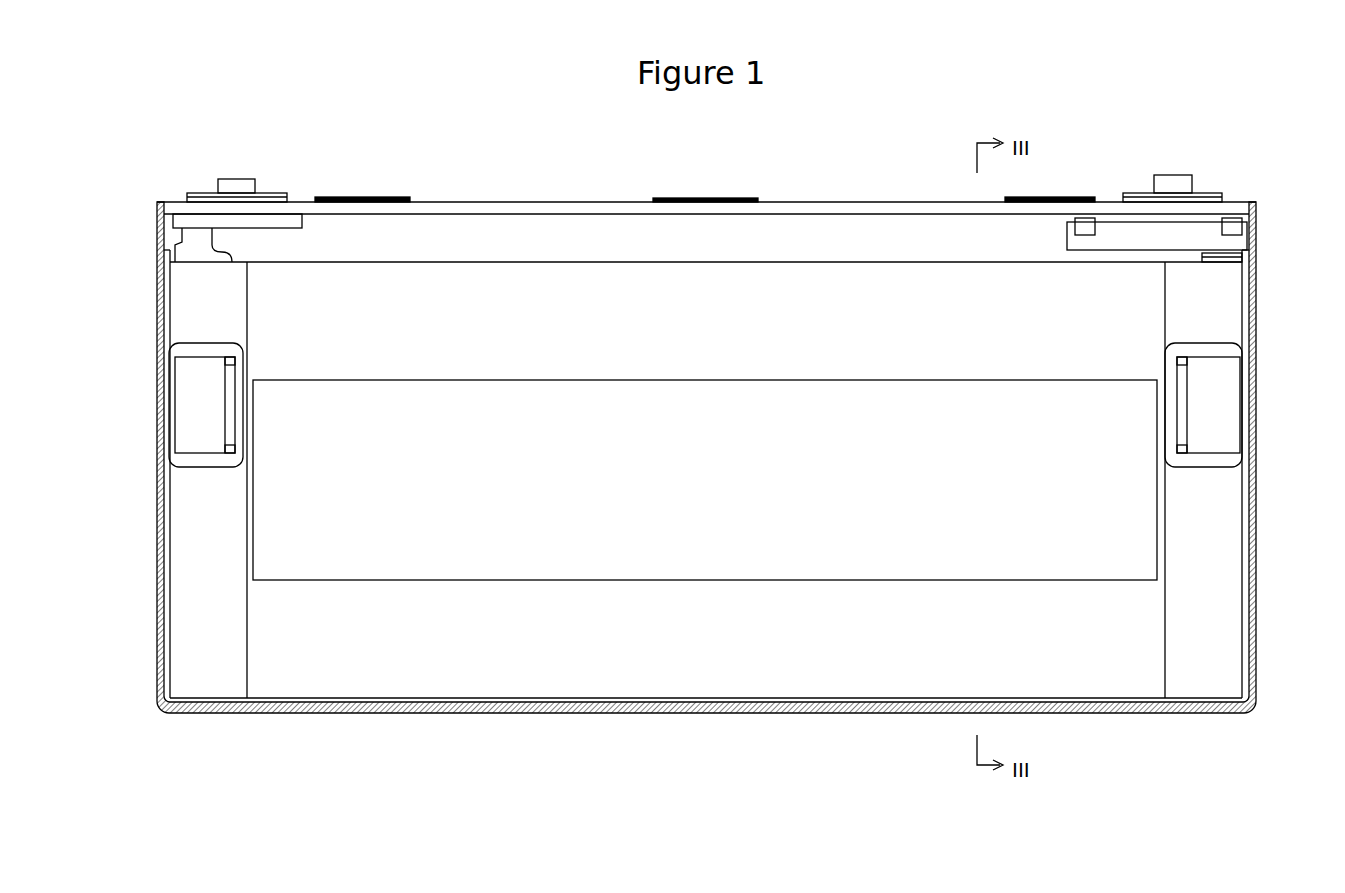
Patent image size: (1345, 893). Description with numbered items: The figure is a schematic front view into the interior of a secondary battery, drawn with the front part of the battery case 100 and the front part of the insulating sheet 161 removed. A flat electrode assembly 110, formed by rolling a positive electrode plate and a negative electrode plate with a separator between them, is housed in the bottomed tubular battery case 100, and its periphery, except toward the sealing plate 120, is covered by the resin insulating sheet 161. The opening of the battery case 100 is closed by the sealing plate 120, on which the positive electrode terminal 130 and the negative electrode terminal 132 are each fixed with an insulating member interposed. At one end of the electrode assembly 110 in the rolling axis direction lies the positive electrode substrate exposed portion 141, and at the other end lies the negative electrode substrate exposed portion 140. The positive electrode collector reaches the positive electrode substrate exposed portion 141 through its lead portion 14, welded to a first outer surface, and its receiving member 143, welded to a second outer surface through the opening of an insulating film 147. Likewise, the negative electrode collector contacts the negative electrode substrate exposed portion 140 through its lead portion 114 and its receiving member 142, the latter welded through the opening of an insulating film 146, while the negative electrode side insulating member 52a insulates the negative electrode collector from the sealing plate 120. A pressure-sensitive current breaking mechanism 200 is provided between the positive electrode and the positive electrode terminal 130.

The battery case 100 is at (1257, 548).
The electrode assembly 110 is at (722, 680).
The lead portion of the negative electrode collector 114 is at (192, 242).
The sealing plate 120 is at (512, 208).
The positive electrode terminal 130 is at (1173, 185).
The negative electrode terminal 132 is at (232, 180).
The lead portion of the positive electrode collector 14 is at (1245, 257).
The negative electrode substrate exposed portion 140 is at (197, 680).
The positive electrode substrate exposed portion 141 is at (1208, 680).
The receiving member of the negative electrode collector 142 is at (188, 427).
The receiving member of the positive electrode collector 143 is at (1217, 427).
The insulating film 146 is at (240, 383).
The insulating film 147 is at (1188, 383).
The insulating sheet 161 is at (160, 620).
The pressure-sensitive current breaking mechanism 200 is at (1190, 235).
The negative electrode side insulating member 52a is at (296, 225).